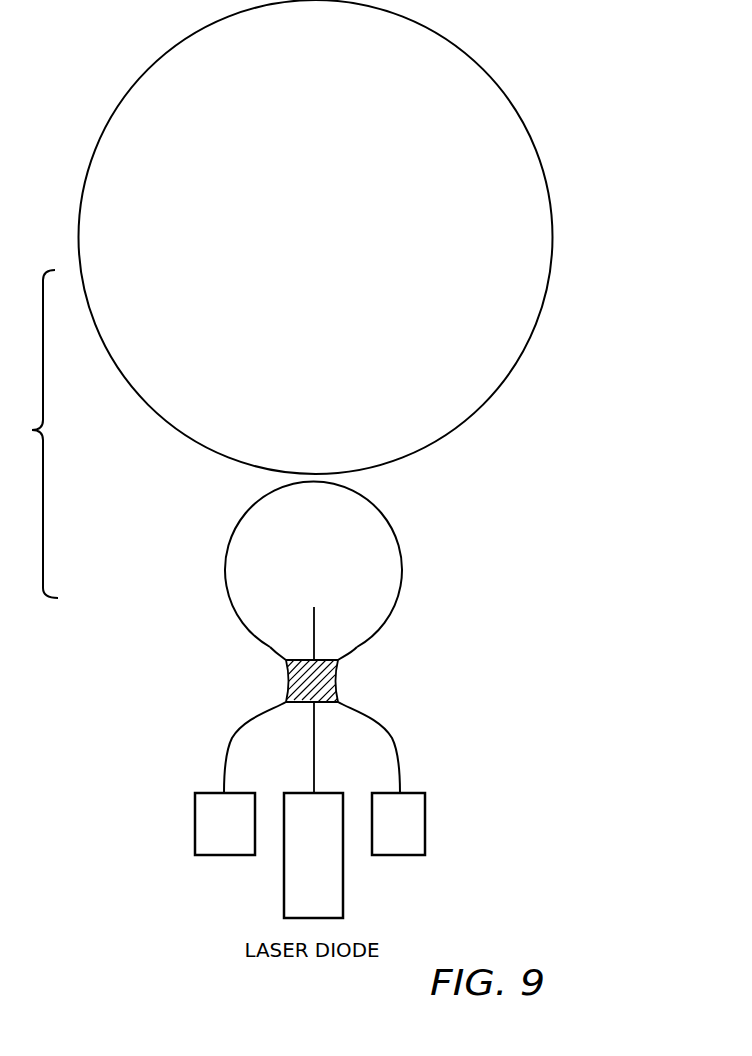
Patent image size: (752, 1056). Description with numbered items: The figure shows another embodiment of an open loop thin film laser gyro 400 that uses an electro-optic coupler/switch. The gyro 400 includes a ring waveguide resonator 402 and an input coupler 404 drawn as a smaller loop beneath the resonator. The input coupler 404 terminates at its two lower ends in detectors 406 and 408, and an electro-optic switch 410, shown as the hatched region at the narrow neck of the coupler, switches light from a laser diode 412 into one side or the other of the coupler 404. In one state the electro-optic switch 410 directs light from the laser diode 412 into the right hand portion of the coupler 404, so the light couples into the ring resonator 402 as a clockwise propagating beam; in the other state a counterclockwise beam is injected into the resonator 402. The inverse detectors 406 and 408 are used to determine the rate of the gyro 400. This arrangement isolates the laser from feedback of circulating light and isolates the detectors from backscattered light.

The thin film laser gyro 400 is at (583, 245).
The ring waveguide resonator 402 is at (527, 347).
The input coupler 404 is at (400, 543).
The detector 406 is at (225, 855).
The detector 408 is at (403, 855).
The electro-optic switch 410 is at (337, 683).
The laser diode 412 is at (285, 893).